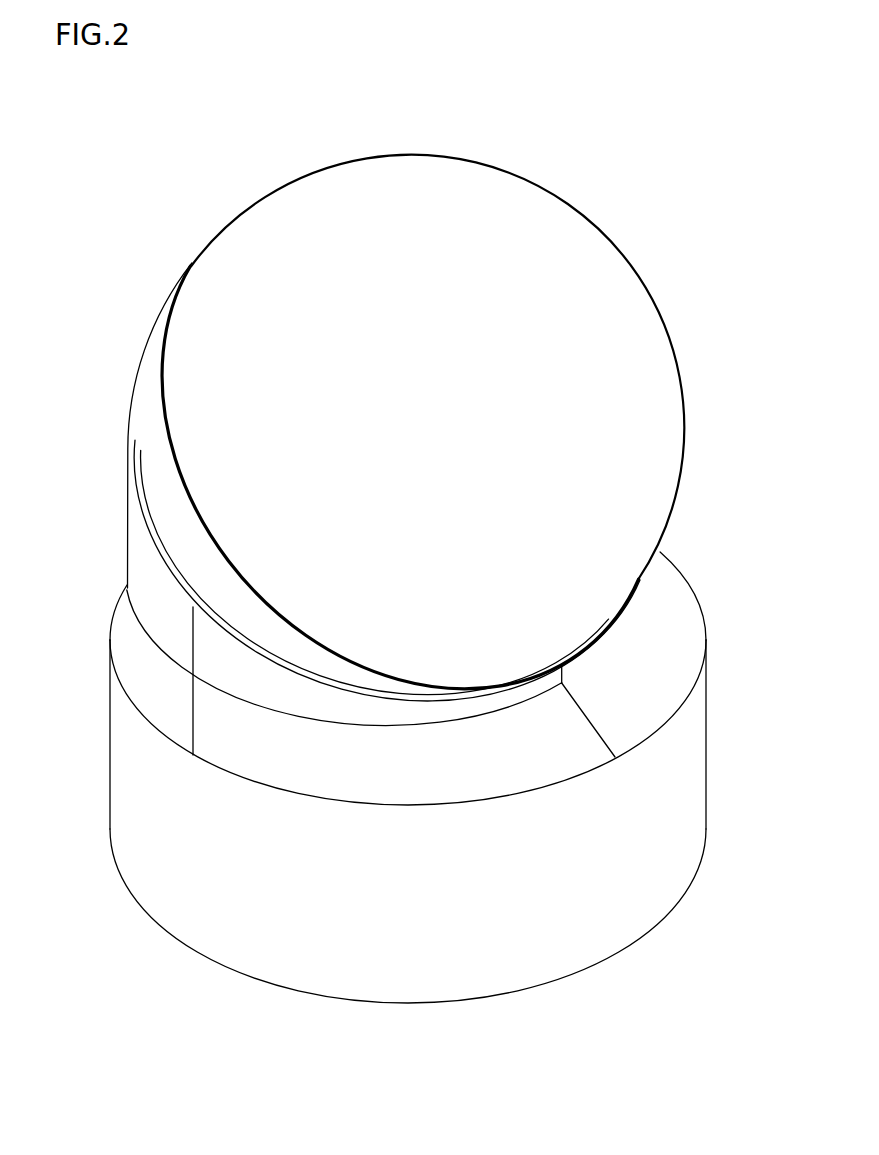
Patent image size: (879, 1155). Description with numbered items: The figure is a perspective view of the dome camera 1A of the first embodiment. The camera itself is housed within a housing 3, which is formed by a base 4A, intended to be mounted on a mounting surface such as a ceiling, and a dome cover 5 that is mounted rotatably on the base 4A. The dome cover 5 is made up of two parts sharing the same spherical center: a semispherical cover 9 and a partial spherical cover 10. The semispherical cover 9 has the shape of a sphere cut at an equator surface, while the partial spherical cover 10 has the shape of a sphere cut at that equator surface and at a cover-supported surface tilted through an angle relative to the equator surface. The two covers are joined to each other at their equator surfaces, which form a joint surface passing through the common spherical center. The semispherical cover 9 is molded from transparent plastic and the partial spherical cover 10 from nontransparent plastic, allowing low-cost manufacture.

The dome camera 1A is at (648, 100).
The housing 3 is at (728, 770).
The base 4A is at (106, 763).
The dome cover 5 is at (690, 326).
The semispherical cover 9 is at (322, 166).
The partial spherical cover 10 is at (145, 350).